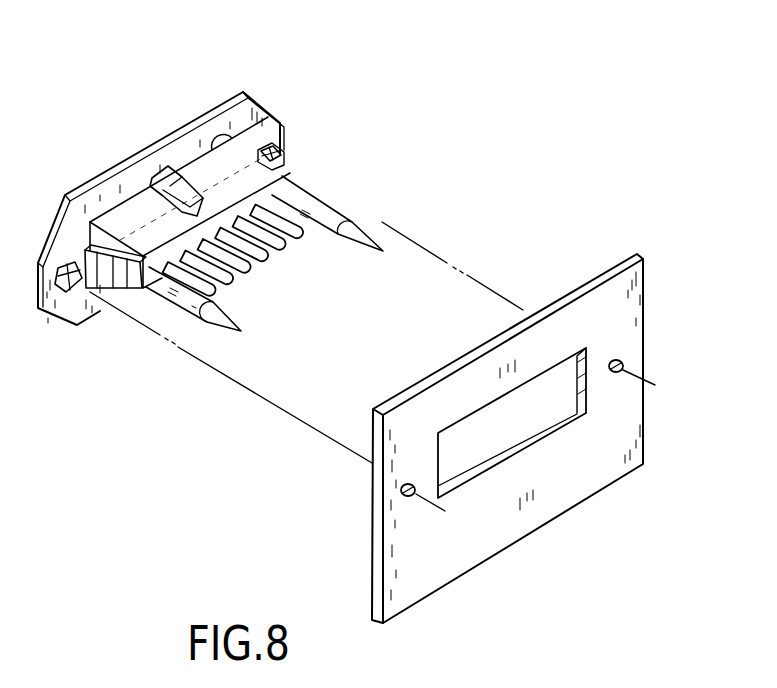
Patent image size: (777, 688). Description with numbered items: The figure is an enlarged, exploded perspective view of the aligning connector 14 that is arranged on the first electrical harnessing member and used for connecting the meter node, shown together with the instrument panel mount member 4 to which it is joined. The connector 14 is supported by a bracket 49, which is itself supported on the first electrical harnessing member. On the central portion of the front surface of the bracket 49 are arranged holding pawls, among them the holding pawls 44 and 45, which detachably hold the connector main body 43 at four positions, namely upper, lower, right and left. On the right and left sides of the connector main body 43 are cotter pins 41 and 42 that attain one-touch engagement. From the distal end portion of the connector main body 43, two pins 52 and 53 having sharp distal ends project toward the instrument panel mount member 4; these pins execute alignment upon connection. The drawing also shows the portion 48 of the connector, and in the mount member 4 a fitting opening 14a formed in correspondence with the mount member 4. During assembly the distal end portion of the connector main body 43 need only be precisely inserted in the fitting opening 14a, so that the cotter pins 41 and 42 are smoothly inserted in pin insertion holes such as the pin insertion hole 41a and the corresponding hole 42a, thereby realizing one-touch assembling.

The connector 14 is at (192, 118).
The bracket 49 is at (87, 190).
The holding pawl 44 is at (168, 180).
The top wall of housing 48 is at (238, 185).
The connector main body 43 is at (262, 150).
The cotter pin 41 is at (286, 162).
The pin 52 is at (345, 217).
The pin 53 is at (185, 316).
The cotter pin 42 is at (70, 292).
The holding pawl 45 is at (90, 292).
The instrument panel mount member 4 is at (640, 252).
The fitting opening 14a is at (588, 367).
The pin insertion hole 41a is at (625, 366).
The screw hole 42a is at (410, 495).